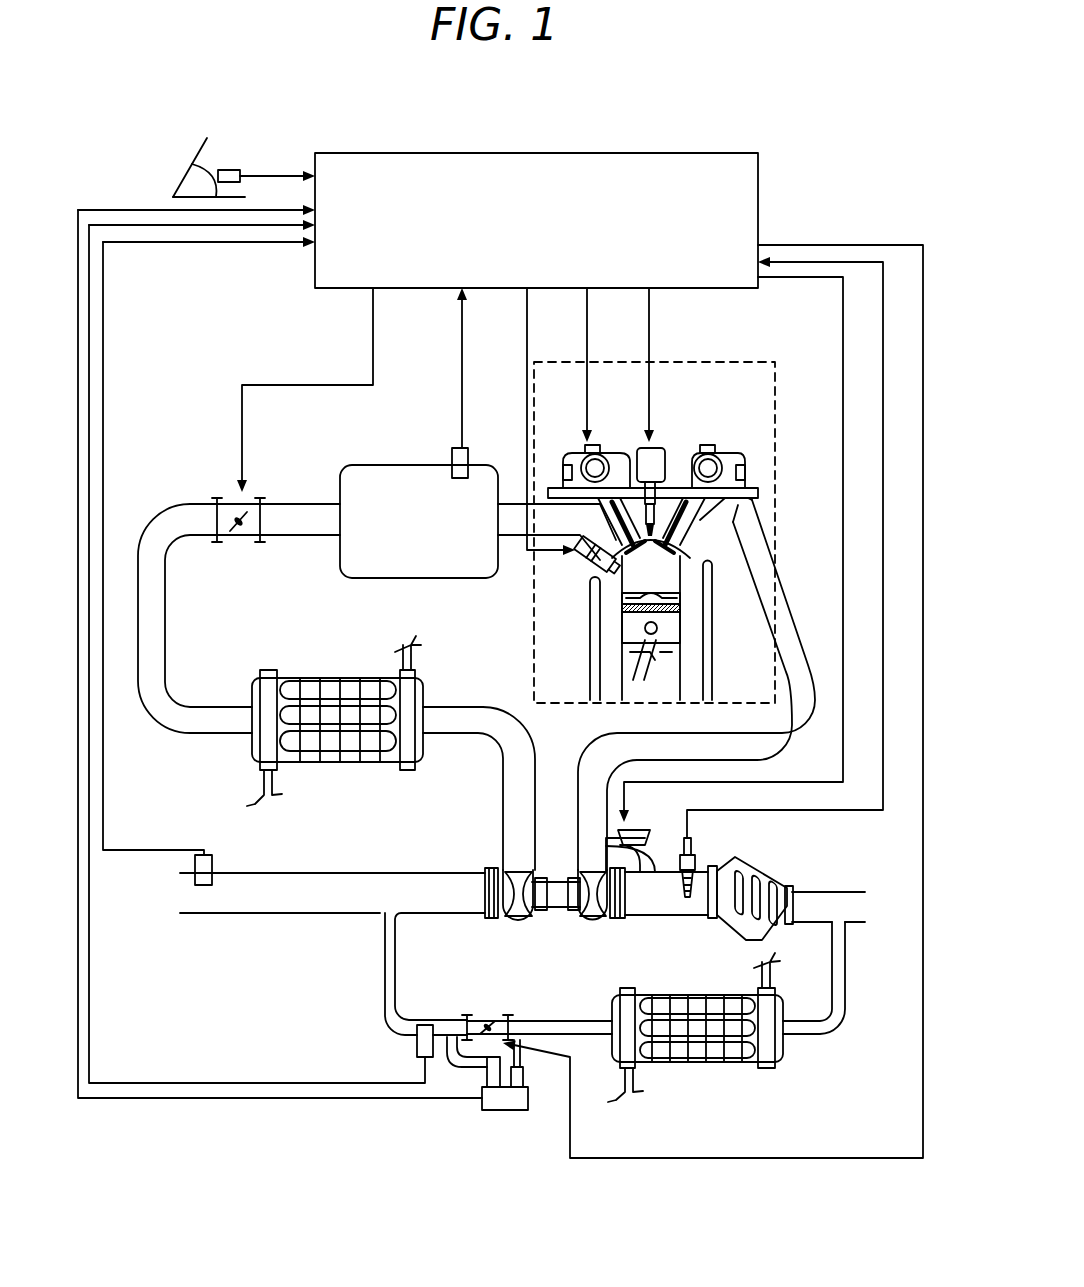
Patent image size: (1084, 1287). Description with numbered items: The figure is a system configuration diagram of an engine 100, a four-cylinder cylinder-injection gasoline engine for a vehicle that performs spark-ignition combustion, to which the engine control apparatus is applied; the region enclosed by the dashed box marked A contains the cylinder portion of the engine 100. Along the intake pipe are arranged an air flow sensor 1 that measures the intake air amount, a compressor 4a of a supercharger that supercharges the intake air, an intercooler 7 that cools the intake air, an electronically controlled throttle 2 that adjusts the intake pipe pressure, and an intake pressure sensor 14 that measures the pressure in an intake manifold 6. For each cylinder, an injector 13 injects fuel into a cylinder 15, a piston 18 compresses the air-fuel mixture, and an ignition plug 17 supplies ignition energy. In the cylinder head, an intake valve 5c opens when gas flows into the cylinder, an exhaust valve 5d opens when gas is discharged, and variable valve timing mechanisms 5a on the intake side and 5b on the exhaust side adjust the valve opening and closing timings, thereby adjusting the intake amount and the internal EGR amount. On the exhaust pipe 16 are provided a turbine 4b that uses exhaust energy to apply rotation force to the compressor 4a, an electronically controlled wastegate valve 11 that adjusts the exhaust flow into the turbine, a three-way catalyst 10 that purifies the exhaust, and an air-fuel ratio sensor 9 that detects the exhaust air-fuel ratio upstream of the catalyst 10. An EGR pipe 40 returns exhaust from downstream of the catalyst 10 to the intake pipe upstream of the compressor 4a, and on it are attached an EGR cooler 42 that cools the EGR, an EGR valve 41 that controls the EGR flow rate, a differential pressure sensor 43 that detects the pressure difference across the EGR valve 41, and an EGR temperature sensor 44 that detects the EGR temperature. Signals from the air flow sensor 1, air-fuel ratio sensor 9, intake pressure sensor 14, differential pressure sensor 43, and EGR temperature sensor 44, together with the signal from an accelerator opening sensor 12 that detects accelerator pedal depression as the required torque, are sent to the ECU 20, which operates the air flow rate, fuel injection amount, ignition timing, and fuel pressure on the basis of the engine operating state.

The air flow sensor 1 is at (205, 867).
The electronically controlled throttle 2 is at (238, 536).
The compressor 4a is at (513, 930).
The turbine 4b is at (593, 927).
The variable valve timing mechanism (intake side) 5a is at (605, 450).
The variable valve timing mechanism (exhaust side) 5b is at (713, 453).
The intake valve 5c is at (589, 592).
The exhaust valve 5d is at (710, 495).
The intake manifold 6 is at (440, 550).
The intercooler 7 is at (328, 678).
The air-fuel ratio sensor 9 is at (682, 840).
The three-way catalyst 10 is at (763, 880).
The electronically controlled wastegate valve 11 is at (632, 828).
The accelerator opening sensor 12 is at (230, 170).
The fuel injection device (injector) 13 is at (578, 562).
The intake pressure sensor 14 is at (470, 450).
The cylinder 15 is at (692, 578).
The exhaust pipe 16 is at (764, 560).
The ignition plug 17 is at (667, 440).
The piston 18 is at (633, 624).
The engine control unit (ECU) 20 is at (638, 165).
The EGR pipe 40 is at (385, 970).
The EGR valve 41 is at (502, 1016).
The EGR cooler 42 is at (748, 1058).
The differential pressure sensor 43 is at (493, 1095).
The EGR temperature sensor 44 is at (416, 1042).
The engine 100 is at (248, 1153).
The engine A is at (717, 362).